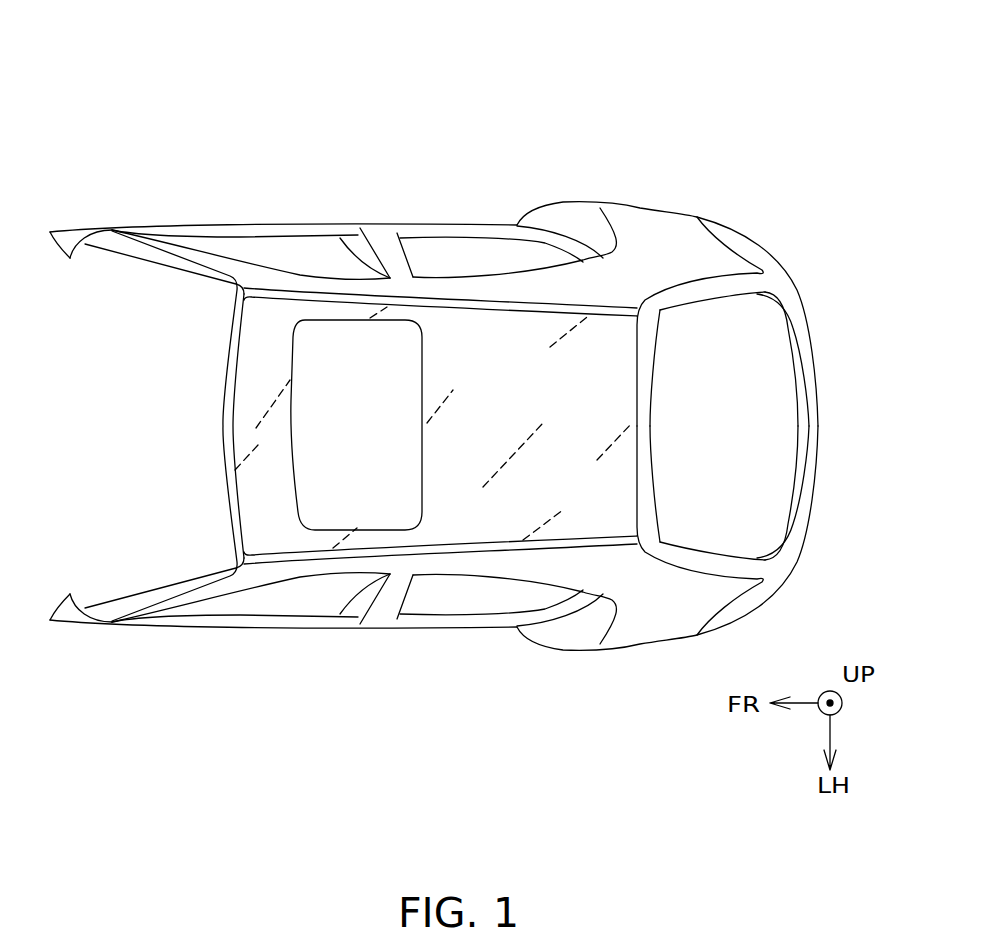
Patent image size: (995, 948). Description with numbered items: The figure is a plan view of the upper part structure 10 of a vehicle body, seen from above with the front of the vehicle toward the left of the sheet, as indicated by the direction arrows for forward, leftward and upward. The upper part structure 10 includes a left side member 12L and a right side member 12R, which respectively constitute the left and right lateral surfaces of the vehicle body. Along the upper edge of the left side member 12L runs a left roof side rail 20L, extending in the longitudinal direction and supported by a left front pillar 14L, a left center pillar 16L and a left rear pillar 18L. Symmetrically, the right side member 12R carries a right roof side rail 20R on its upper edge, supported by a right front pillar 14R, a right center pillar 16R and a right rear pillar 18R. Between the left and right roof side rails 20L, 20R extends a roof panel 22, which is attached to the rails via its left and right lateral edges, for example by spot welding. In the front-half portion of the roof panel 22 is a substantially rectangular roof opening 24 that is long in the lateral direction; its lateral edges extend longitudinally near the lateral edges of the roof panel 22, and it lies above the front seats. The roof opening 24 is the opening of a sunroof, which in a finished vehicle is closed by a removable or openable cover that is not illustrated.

The upper part structure 10 is at (720, 102).
The right side member 12R is at (432, 205).
The left side member 12L is at (420, 657).
The right front pillar 14R is at (170, 258).
The left front pillar 14L is at (183, 593).
The right center pillar 16R is at (383, 236).
The left center pillar 16L is at (383, 618).
The right rear pillar 18R is at (627, 270).
The left rear pillar 18L is at (645, 617).
The right roof side rail 20R is at (294, 280).
The left roof side rail 20L is at (297, 570).
The roof panel 22 is at (550, 402).
The roof opening 24 is at (420, 365).